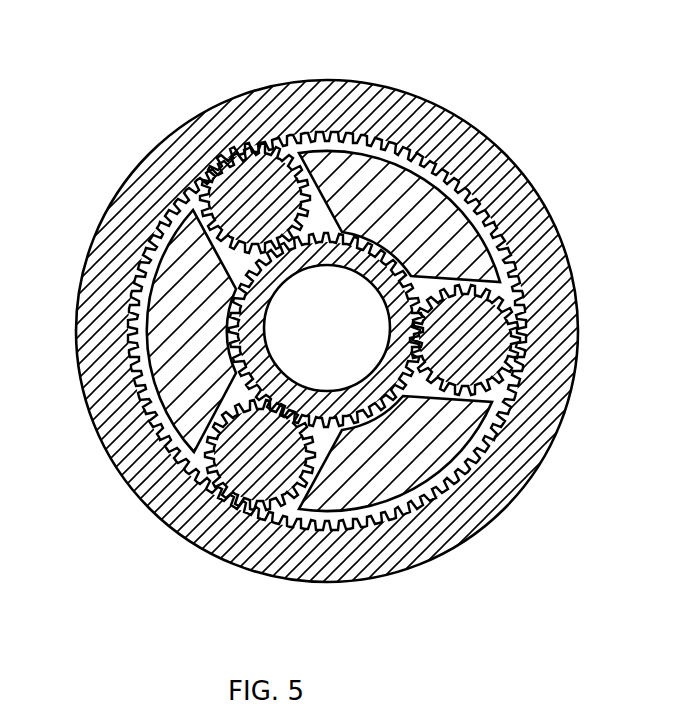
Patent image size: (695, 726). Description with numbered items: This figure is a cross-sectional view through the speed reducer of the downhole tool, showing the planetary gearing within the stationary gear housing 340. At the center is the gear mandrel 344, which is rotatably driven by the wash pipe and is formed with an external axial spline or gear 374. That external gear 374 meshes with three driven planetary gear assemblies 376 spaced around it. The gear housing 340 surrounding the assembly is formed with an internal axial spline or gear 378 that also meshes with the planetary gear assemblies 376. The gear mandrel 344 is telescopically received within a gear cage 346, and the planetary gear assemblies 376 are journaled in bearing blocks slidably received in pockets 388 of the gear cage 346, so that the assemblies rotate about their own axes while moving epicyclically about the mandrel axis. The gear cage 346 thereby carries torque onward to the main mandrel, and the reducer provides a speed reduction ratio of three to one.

The stationary gear housing 340 is at (333, 85).
The gear mandrel member 344 is at (265, 305).
The gear cage 346 is at (455, 216).
The external axial spline or gear 374 is at (377, 290).
The driven planetary gear assemblies 376 is at (242, 150).
The internal axial spline or gear 378 is at (327, 331).
The pockets 388 is at (380, 513).